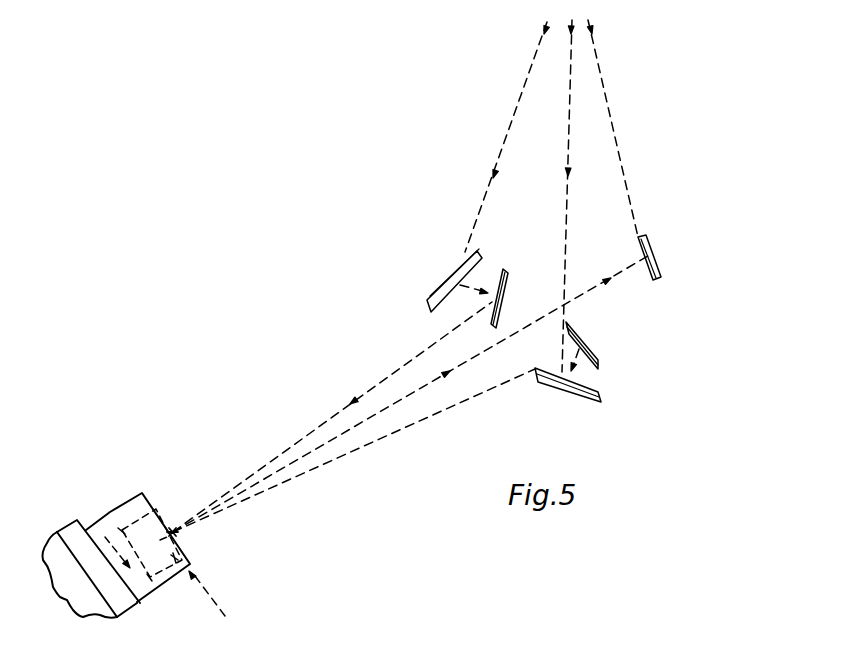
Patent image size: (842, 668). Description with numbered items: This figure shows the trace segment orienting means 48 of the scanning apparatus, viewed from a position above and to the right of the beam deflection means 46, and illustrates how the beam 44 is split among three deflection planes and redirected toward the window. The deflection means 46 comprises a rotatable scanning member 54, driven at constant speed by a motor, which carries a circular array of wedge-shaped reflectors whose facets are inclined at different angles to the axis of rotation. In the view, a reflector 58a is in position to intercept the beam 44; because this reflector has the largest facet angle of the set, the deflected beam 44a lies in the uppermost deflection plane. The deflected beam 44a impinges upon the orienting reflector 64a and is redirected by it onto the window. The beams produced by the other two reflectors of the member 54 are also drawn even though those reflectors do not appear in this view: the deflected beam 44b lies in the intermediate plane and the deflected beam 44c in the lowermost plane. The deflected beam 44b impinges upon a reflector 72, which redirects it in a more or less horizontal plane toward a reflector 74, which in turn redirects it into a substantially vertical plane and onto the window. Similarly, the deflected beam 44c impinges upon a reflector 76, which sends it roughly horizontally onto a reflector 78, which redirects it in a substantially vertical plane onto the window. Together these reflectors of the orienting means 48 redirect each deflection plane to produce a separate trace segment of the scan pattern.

The beam 44 is at (207, 595).
The deflected beam 44a is at (615, 130).
The deflected beam 44b is at (508, 146).
The deflected beam 44c is at (565, 203).
The deflection means 46 is at (109, 485).
The trace segment orienting means 48 is at (434, 271).
The rotatable scanning member 54 is at (73, 533).
The reflector 58a is at (157, 527).
The orienting reflector 64a is at (652, 264).
The reflector 72 is at (505, 278).
The reflector 74 is at (441, 290).
The reflector 76 is at (590, 347).
The reflector 78 is at (590, 391).